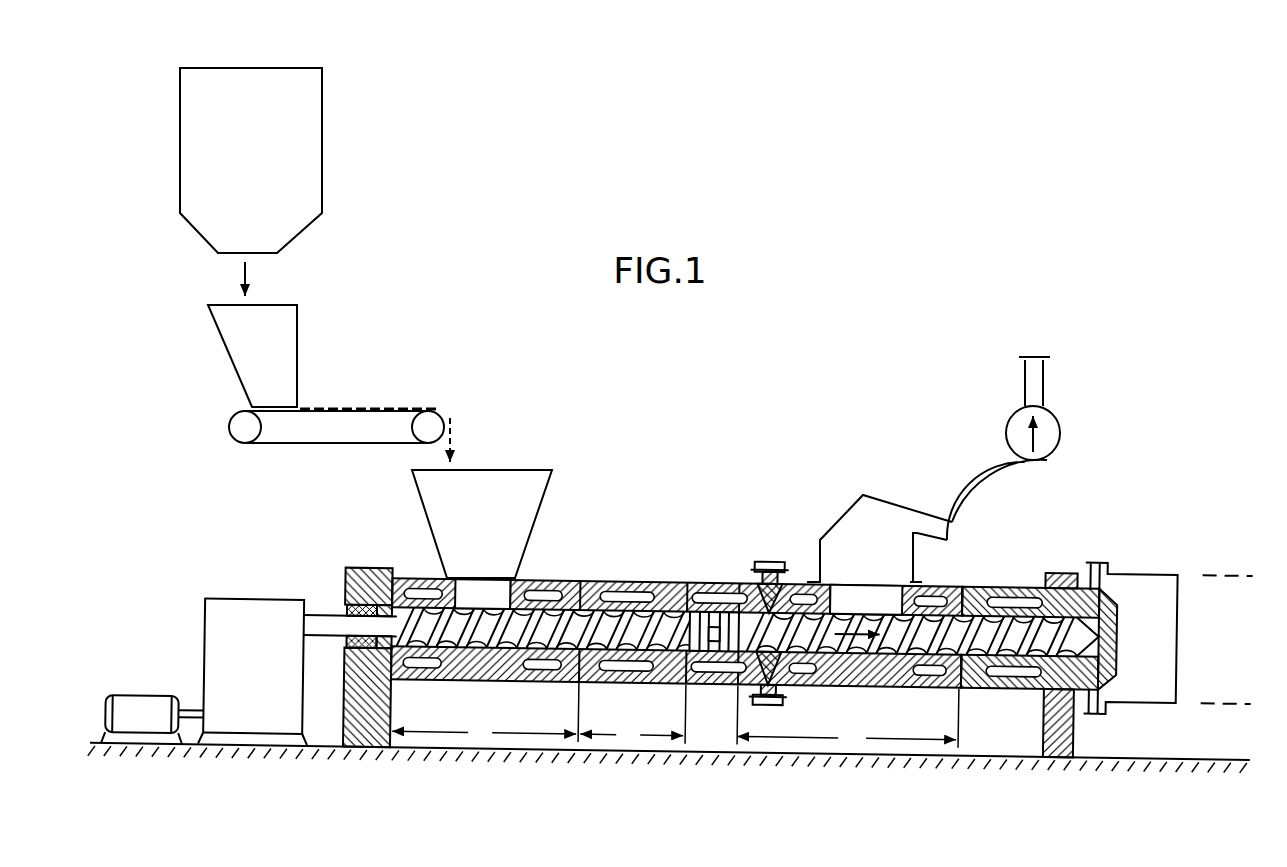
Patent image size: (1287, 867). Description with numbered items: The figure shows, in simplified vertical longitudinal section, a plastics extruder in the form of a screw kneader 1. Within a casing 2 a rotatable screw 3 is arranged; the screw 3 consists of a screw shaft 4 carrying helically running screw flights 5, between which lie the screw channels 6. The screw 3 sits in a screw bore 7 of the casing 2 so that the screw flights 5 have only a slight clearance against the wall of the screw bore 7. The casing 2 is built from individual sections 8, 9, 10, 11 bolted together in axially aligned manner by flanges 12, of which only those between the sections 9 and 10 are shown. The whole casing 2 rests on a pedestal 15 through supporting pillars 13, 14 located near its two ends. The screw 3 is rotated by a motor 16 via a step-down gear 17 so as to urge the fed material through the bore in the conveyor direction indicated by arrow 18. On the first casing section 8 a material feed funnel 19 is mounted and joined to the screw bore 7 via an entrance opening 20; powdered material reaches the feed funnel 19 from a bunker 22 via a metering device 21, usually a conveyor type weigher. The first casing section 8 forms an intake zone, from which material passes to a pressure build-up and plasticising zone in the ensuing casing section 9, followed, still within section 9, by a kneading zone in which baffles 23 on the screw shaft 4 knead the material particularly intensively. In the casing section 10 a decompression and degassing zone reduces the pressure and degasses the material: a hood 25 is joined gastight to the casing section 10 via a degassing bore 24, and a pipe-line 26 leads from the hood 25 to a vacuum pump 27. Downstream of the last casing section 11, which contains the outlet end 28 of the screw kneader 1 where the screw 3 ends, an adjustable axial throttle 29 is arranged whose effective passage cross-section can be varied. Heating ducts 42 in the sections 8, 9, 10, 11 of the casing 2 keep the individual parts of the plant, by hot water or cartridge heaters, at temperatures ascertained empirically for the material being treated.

The screw kneader 1 is at (330, 556).
The casing 2 is at (583, 574).
The screw 3 is at (608, 622).
The screw shaft 4 is at (317, 618).
The screw flights 5 is at (422, 645).
The screw channels 6 is at (455, 645).
The screw bore 7 is at (499, 650).
The first casing section 8 is at (537, 572).
The casing section 9 is at (673, 582).
The casing section 10 is at (798, 585).
The last casing section 11 is at (1015, 582).
The flanges 12 is at (773, 553).
The supporting pillar 13 is at (363, 566).
The supporting pillar 14 is at (1060, 559).
The pedestal 15 is at (608, 752).
The motor 16 is at (135, 710).
The step-down gear 17 is at (225, 633).
The arrow 18 is at (857, 636).
The material feed funnel 19 is at (517, 490).
The entrance opening 20 is at (481, 572).
The metering device 21 is at (365, 405).
The bunker 22 is at (306, 161).
The baffles 23 is at (712, 618).
The degassing bore 24 is at (862, 572).
The hood 25 is at (868, 505).
The pipe-line 26 is at (1007, 512).
The vacuum pump 27 is at (1012, 436).
The outlet end 28 is at (1118, 590).
The axial throttle 29 is at (1158, 620).
The heating ducts 42 is at (640, 592).